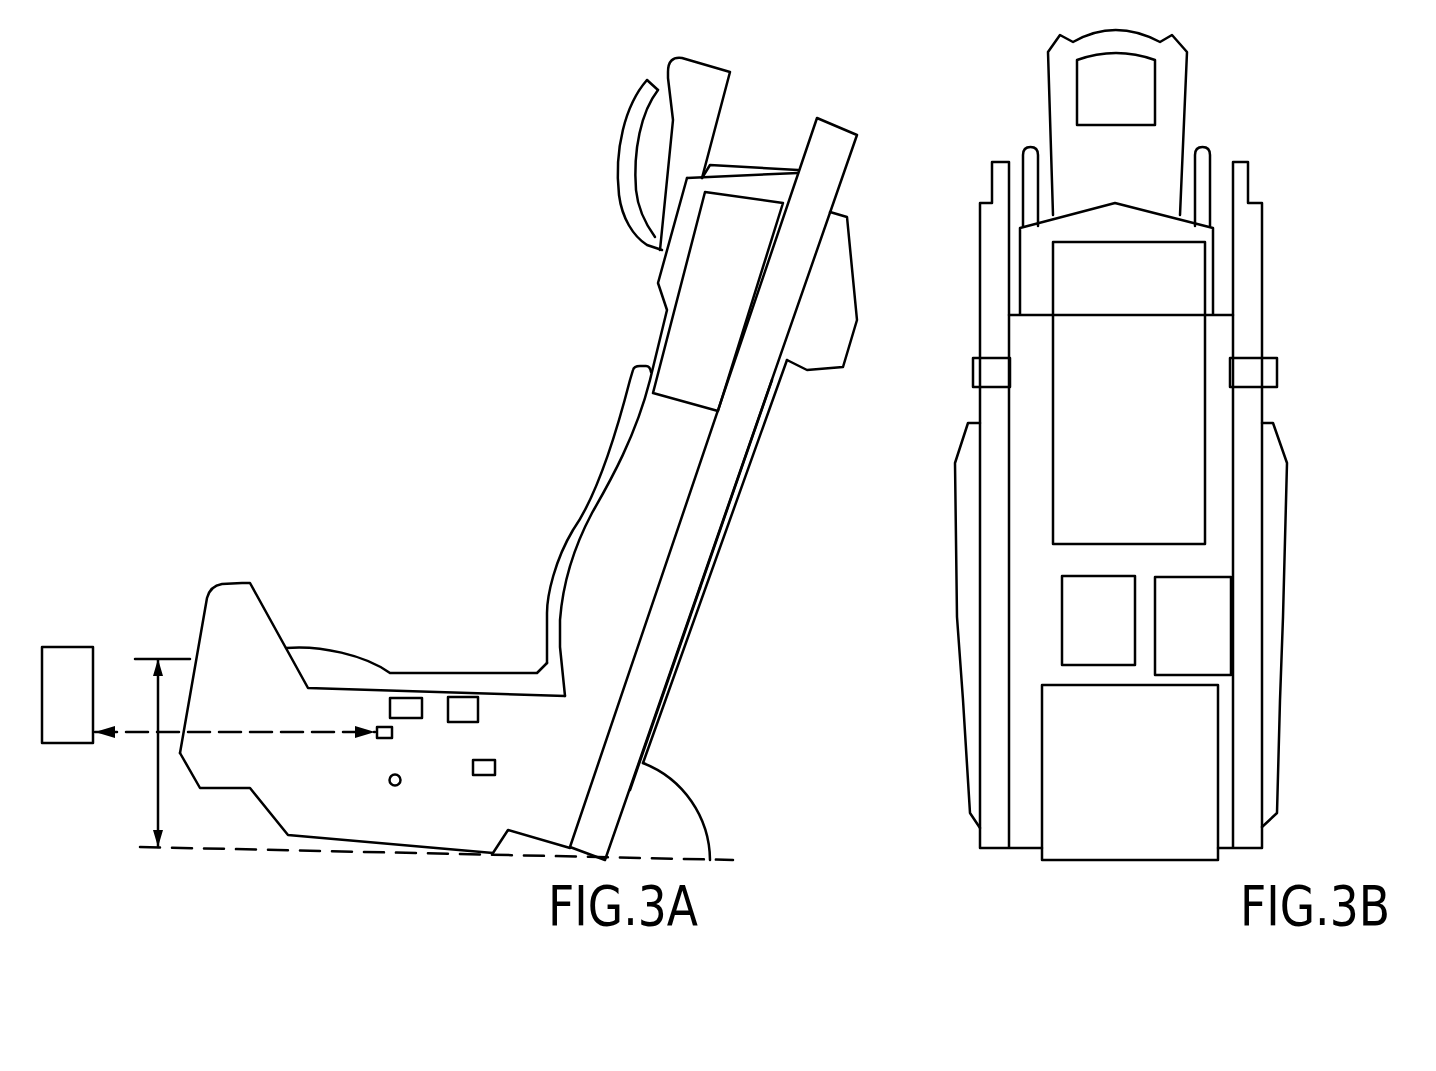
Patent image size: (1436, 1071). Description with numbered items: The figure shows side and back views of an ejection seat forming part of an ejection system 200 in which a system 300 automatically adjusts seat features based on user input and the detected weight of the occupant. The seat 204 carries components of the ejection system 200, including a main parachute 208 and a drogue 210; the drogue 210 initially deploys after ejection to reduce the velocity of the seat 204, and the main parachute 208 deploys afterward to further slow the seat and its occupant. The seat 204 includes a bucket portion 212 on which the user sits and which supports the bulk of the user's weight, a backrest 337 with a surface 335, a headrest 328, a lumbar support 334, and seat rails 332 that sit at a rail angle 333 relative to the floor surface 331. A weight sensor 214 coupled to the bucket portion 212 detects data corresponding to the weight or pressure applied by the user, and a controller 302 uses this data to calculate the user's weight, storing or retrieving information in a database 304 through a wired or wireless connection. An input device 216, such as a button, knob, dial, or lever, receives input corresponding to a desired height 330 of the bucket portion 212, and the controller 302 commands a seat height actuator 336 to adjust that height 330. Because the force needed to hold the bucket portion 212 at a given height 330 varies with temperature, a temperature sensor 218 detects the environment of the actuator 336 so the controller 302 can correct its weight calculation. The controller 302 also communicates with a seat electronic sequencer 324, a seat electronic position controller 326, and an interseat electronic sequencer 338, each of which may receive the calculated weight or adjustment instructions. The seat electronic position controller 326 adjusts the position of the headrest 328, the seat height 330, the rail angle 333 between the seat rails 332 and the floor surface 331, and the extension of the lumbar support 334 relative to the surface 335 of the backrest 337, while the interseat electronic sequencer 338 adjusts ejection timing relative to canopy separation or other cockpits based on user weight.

In FIG. 3A, the ejection system 200 is at (265, 563).
In FIG. 3B, the ejection system 200 is at (1330, 258).
In FIG. 3A, the seat 204 is at (595, 476).
In FIG. 3B, the seat 204 is at (1310, 446).
In FIG. 3A, the main parachute 208 is at (722, 400).
In FIG. 3B, the main parachute 208 is at (1207, 502).
In FIG. 3A, the drogue 210 is at (843, 342).
In FIG. 3B, the drogue 210 is at (1205, 292).
In FIG. 3A, the bucket portion 212 is at (410, 649).
In FIG. 3A, the weight sensor 214 is at (470, 697).
In FIG. 3A, the input device 216 is at (483, 776).
In FIG. 3A, the temperature sensor 218 is at (395, 786).
In FIG. 3A, the system 300 is at (255, 459).
In FIG. 3B, the system 300 is at (1280, 201).
In FIG. 3A, the controller 302 is at (383, 740).
In FIG. 3A, the database 304 is at (68, 745).
In FIG. 3B, the seat electronic sequencer 324 is at (1200, 647).
In FIG. 3A, the seat electronic position controller 326 is at (393, 698).
In FIG. 3A, the headrest 328 is at (670, 147).
In FIG. 3B, the headrest 328 is at (1077, 148).
In FIG. 3A, the height 330 is at (160, 812).
In FIG. 3A, the floor surface 331 is at (278, 845).
In FIG. 3A, the seat rails 332 is at (687, 628).
In FIG. 3A, the rail angle 333 is at (700, 815).
In FIG. 3A, the lumbar support 334 is at (582, 530).
In FIG. 3A, the surface 335 is at (718, 558).
In FIG. 3B, the seat height actuator 336 is at (1153, 860).
In FIG. 3A, the backrest 337 is at (768, 425).
In FIG. 3B, the interseat electronic sequencer 338 is at (1073, 627).